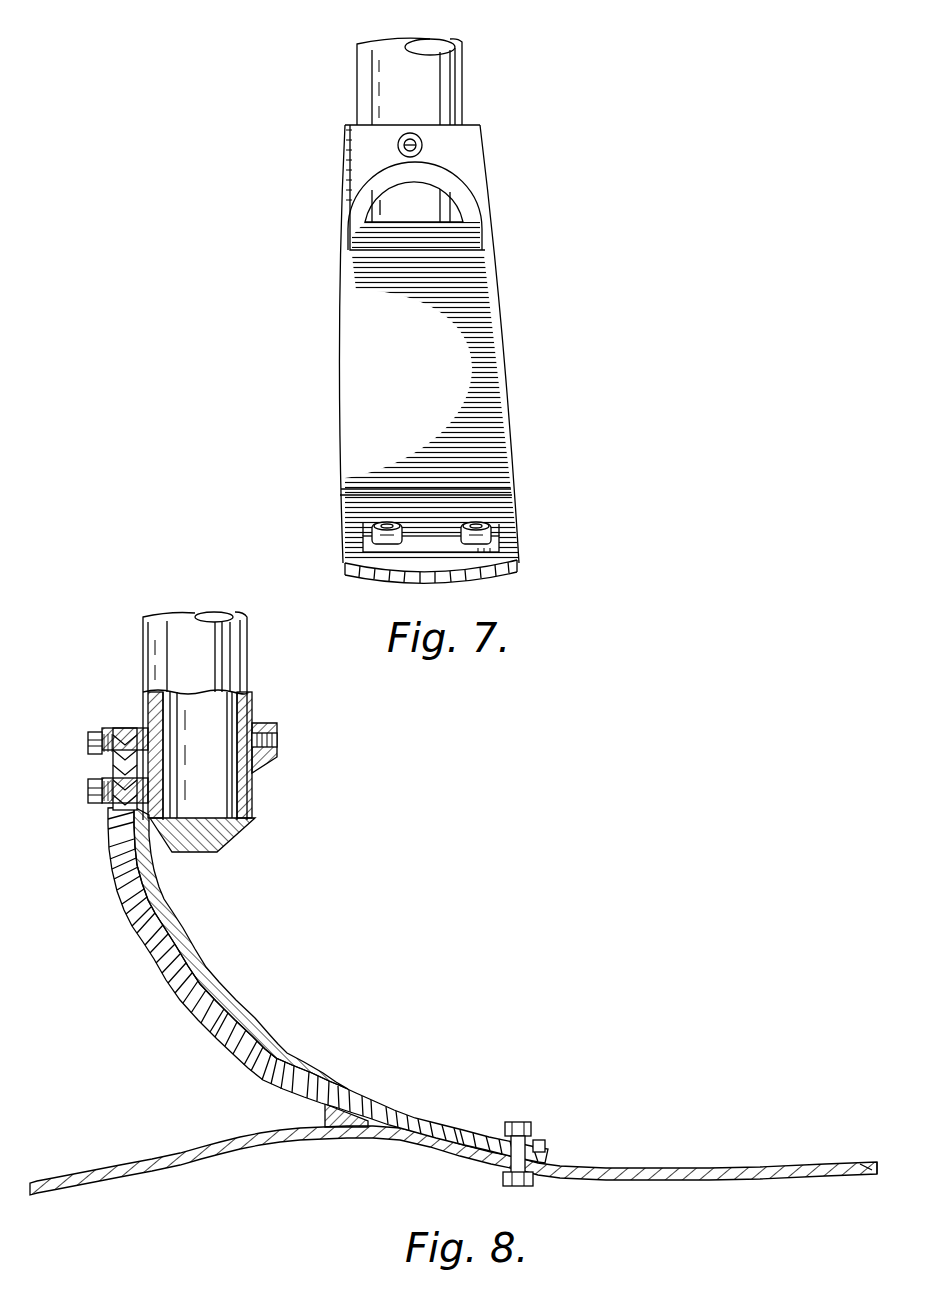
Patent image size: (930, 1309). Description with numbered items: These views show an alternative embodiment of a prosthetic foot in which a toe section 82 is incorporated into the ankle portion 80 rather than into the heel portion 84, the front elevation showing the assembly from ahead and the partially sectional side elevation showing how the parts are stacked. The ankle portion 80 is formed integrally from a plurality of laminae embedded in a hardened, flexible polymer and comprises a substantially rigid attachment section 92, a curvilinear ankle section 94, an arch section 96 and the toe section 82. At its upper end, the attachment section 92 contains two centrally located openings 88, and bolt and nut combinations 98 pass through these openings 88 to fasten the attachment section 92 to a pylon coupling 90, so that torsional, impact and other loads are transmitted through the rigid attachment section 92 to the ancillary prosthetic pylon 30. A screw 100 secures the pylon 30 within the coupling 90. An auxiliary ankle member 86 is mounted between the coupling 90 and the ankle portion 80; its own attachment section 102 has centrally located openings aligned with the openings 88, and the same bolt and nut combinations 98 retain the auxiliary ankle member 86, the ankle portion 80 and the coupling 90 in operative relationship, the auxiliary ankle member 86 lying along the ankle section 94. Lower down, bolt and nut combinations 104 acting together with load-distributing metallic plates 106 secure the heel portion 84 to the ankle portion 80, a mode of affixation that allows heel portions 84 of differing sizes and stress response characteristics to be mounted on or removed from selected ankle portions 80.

In FIG. 7, the pylon 30 is at (348, 88).
In FIG. 8, the pylon 30 is at (260, 658).
In FIG. 7, the ankle portion 80 is at (333, 545).
In FIG. 8, the ankle portion 80 is at (212, 1056).
In FIG. 7, the toe section 82 is at (505, 578).
In FIG. 8, the toe section 82 is at (818, 1161).
In FIG. 8, the heel portion 84 is at (262, 1152).
In FIG. 7, the auxiliary ankle member 86 is at (370, 384).
In FIG. 8, the auxiliary ankle member 86 is at (272, 1020).
In FIG. 8, the openings 88 is at (100, 733).
In FIG. 7, the coupling 90 is at (346, 166).
In FIG. 8, the coupling 90 is at (270, 772).
In FIG. 8, the attachment section 92 is at (112, 727).
In FIG. 8, the ankle section 94 is at (145, 952).
In FIG. 8, the arch section 96 is at (425, 1110).
In FIG. 8, the bolt and nut combinations 98 is at (86, 745).
In FIG. 7, the screw 100 is at (423, 147).
In FIG. 8, the screw 100 is at (278, 742).
In FIG. 8, the attachment section 102 is at (128, 727).
In FIG. 7, the bolt and nut combinations 104 is at (371, 528).
In FIG. 8, the bolt and nut combinations 104 is at (522, 1124).
In FIG. 7, the load-distributing metallic plates 106 is at (503, 548).
In FIG. 8, the load-distributing metallic plates 106 is at (548, 1144).